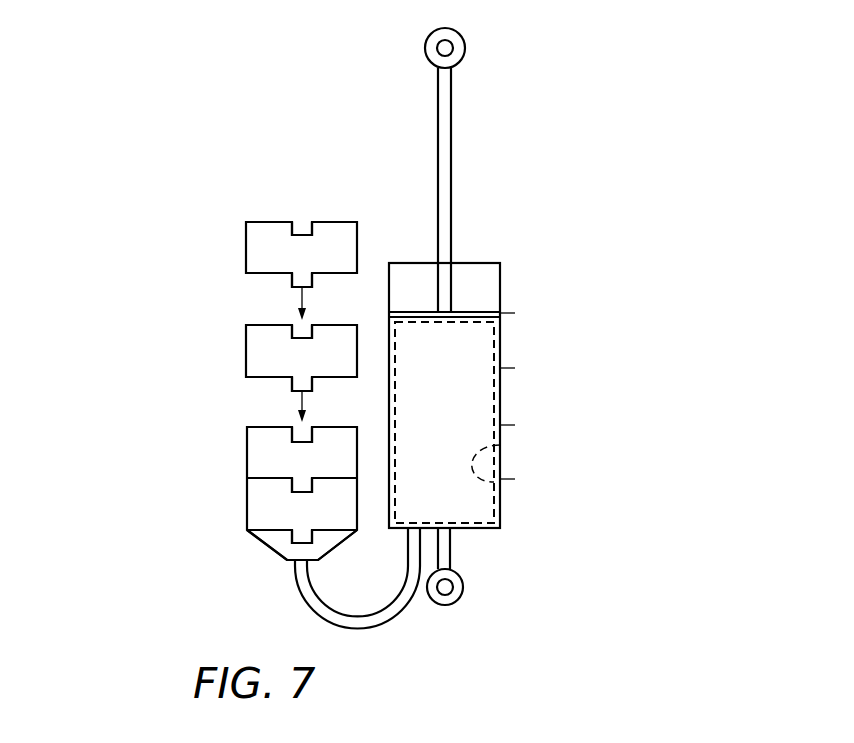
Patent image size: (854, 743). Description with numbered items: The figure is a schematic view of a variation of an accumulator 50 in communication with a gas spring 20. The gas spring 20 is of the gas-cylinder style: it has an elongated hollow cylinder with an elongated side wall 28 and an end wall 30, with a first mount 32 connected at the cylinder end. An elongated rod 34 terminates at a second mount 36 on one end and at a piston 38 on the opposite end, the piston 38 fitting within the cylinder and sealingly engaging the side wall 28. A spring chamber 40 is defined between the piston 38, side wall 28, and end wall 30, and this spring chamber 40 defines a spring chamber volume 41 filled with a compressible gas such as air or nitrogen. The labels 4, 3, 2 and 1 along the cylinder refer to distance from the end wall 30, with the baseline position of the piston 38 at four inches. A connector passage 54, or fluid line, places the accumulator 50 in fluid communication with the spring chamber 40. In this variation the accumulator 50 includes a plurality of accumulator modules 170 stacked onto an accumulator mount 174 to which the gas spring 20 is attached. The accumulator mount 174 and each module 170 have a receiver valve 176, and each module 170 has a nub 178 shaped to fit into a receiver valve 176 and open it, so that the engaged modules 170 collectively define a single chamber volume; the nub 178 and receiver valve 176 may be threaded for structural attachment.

The gas spring 20 is at (596, 285).
The side wall 28 is at (500, 517).
The end wall 30 is at (487, 530).
The first mount 32 is at (458, 601).
The elongated rod 34 is at (445, 137).
The second mount 36 is at (450, 33).
The piston 38 is at (477, 311).
The spring chamber 40 is at (458, 410).
The spring chamber volume 41 is at (500, 445).
The accumulator 50 is at (122, 456).
The connector passage 54 is at (360, 628).
The accumulator module 170 is at (246, 233).
The accumulator mount 174 is at (266, 543).
The receiver valve 176 is at (302, 228).
The nub 178 is at (292, 282).
The distance label 1 is at (517, 479).
The distance label 2 is at (517, 425).
The distance label 3 is at (517, 369).
The distance label 4 is at (517, 313).